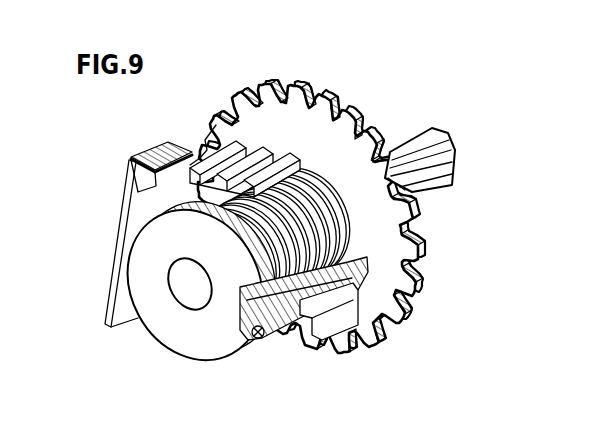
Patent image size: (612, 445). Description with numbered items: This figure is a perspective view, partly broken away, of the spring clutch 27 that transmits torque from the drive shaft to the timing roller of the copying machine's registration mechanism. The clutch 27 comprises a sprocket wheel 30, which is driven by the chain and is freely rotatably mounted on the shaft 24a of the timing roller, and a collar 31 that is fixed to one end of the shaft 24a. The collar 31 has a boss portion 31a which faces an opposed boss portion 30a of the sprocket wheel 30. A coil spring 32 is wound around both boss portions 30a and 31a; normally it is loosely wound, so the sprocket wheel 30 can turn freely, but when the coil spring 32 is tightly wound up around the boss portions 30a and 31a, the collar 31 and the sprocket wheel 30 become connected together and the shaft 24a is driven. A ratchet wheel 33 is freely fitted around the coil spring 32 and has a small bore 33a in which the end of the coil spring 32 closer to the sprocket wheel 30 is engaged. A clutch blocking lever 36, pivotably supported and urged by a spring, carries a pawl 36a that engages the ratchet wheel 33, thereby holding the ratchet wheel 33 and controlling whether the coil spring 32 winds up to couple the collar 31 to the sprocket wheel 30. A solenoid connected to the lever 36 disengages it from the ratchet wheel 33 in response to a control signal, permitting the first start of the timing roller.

The shaft 24a is at (444, 180).
The spring clutch 27 is at (247, 357).
The sprocket wheel 30 is at (396, 302).
The boss portion 30a is at (323, 175).
The collar 31 is at (192, 337).
The boss portion 31a is at (215, 243).
The coil spring 32 is at (338, 212).
The ratchet wheel 33 is at (290, 330).
The small bore 33a is at (375, 342).
The clutch blocking lever 36 is at (107, 278).
The pawl 36a is at (172, 145).